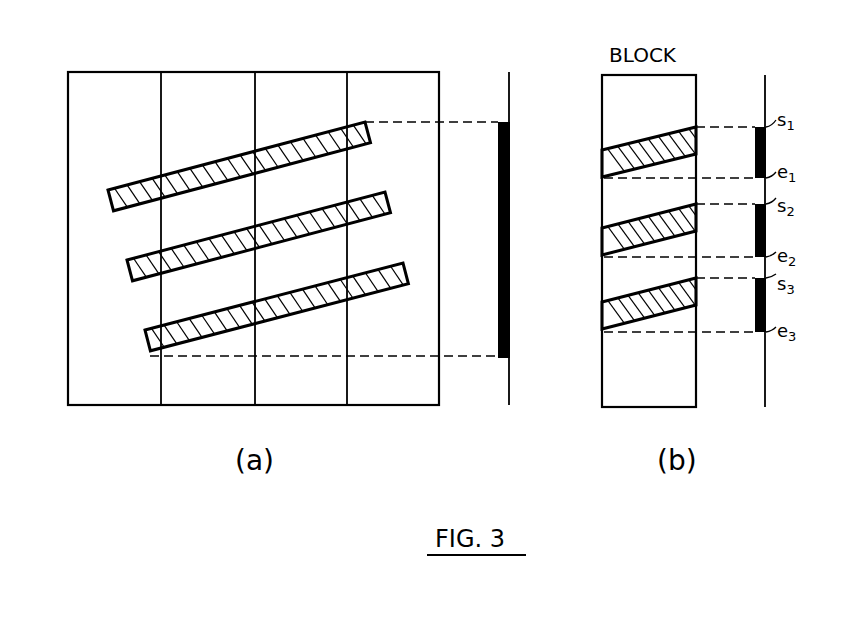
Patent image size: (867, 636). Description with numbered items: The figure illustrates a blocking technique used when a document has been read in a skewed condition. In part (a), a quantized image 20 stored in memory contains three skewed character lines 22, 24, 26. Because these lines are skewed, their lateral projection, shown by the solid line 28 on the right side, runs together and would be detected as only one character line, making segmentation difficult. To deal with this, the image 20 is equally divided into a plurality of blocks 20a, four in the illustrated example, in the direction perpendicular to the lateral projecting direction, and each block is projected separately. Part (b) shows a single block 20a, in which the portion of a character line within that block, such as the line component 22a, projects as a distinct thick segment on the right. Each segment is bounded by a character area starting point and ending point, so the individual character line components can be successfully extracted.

The quantized image 20 is at (127, 70).
The block 20a is at (348, 58).
The character line 22 is at (133, 182).
The character line 24 is at (128, 272).
The character line 26 is at (147, 345).
The lateral projection 28 is at (510, 190).
The character line component in one block 22a is at (602, 165).